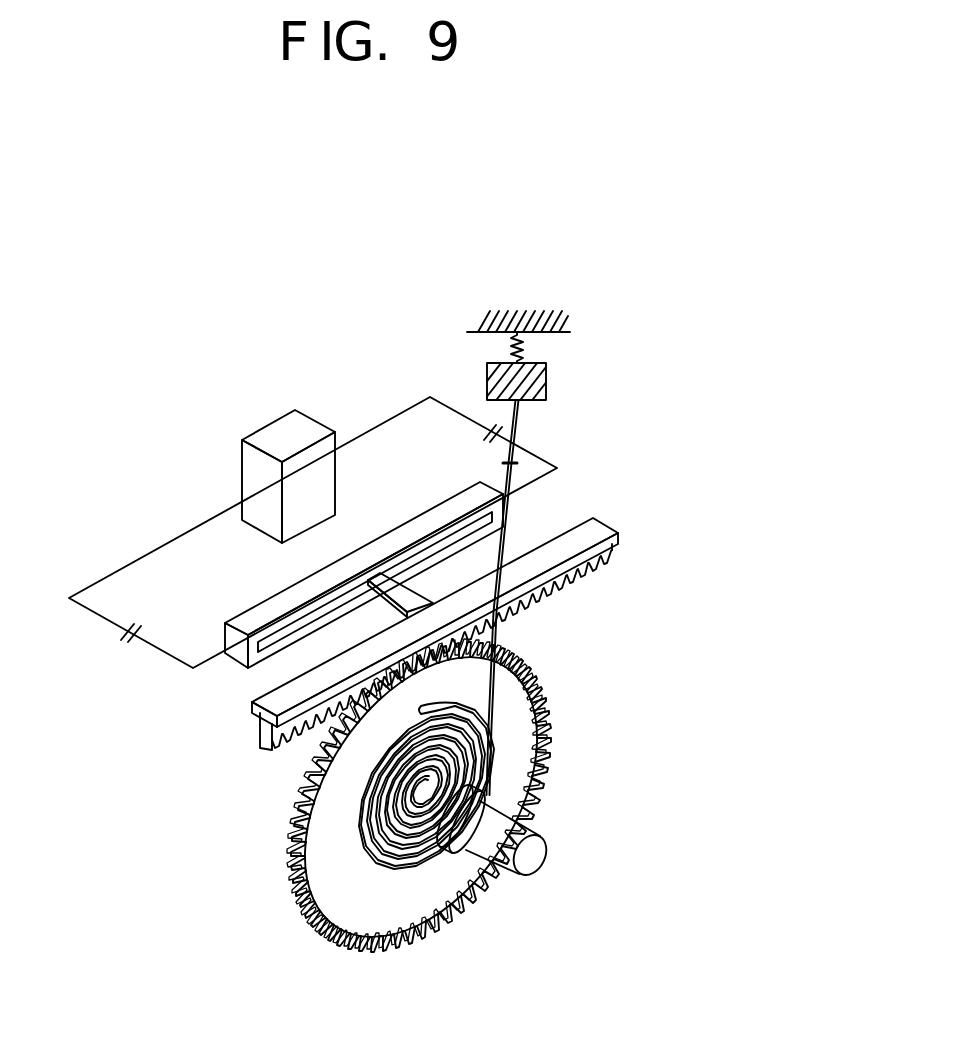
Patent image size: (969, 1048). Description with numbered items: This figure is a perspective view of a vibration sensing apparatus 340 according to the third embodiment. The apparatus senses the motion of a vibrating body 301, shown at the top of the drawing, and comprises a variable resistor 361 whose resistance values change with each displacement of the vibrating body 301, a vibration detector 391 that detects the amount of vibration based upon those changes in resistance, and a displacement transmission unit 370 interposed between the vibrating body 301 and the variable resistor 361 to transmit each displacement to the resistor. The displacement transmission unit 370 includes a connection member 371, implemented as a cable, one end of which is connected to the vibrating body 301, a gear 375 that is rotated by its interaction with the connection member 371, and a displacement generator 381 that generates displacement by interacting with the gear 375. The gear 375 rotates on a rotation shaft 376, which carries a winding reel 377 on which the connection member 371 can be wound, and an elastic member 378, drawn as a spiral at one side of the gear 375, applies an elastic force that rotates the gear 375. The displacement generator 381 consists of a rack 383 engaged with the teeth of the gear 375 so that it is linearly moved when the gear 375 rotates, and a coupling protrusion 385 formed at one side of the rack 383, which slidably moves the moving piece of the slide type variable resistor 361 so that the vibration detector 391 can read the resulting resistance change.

The vibrating body 301 is at (546, 379).
The vibration sensing apparatus 340 is at (742, 497).
The variable resistor 361 is at (258, 612).
The vibration detector 391 is at (242, 451).
The displacement transmission unit 370 is at (703, 605).
The displacement generator 381 is at (387, 632).
The coupling protrusion 385 is at (293, 650).
The rack 383 is at (256, 717).
The connection member 371 is at (497, 632).
The gear 375 is at (522, 732).
The rotation shaft 376 is at (535, 853).
The winding reel 377 is at (468, 852).
The elastic member 378 is at (378, 868).